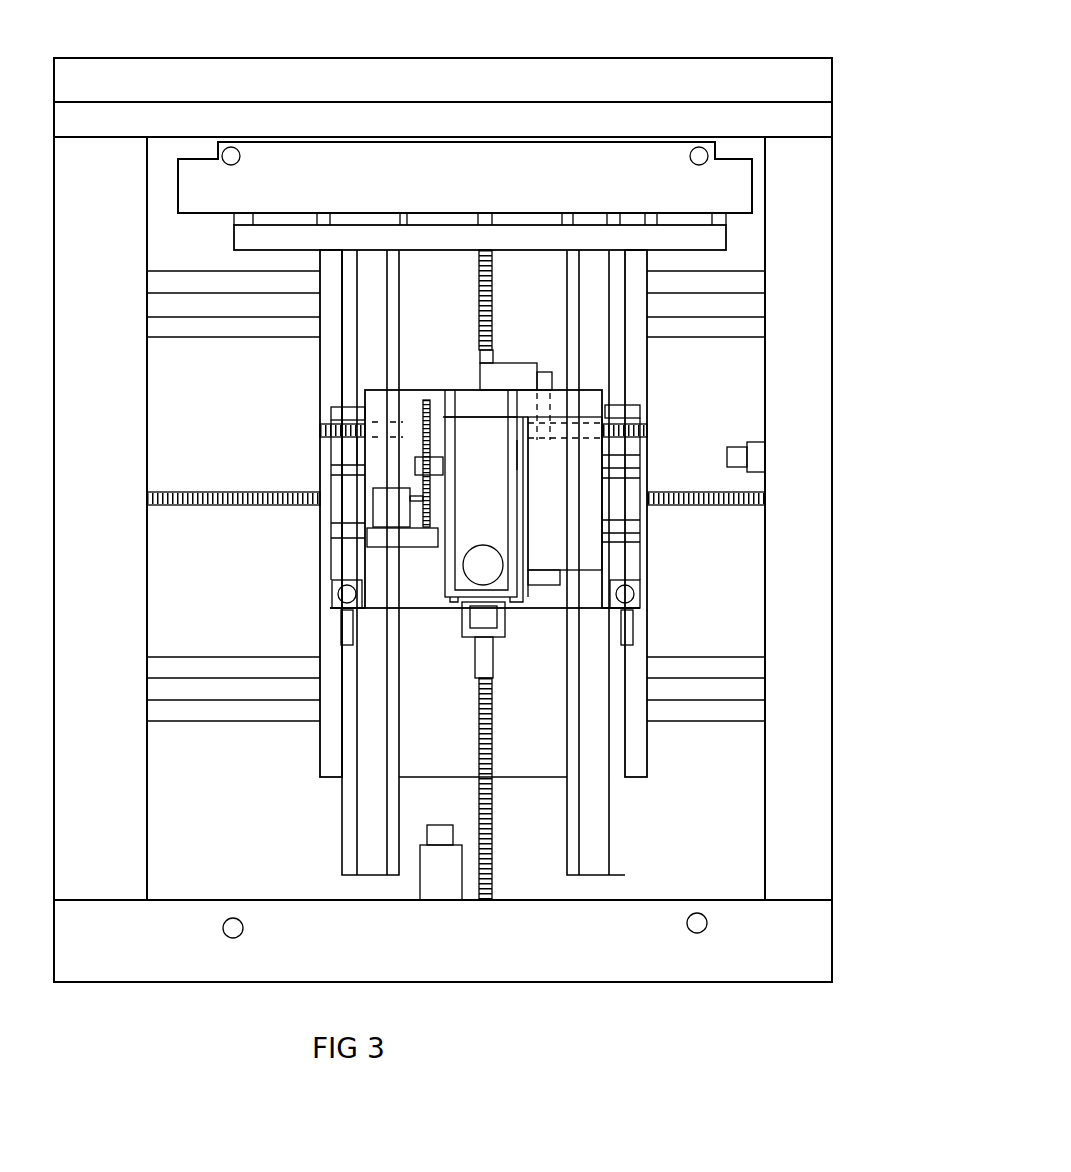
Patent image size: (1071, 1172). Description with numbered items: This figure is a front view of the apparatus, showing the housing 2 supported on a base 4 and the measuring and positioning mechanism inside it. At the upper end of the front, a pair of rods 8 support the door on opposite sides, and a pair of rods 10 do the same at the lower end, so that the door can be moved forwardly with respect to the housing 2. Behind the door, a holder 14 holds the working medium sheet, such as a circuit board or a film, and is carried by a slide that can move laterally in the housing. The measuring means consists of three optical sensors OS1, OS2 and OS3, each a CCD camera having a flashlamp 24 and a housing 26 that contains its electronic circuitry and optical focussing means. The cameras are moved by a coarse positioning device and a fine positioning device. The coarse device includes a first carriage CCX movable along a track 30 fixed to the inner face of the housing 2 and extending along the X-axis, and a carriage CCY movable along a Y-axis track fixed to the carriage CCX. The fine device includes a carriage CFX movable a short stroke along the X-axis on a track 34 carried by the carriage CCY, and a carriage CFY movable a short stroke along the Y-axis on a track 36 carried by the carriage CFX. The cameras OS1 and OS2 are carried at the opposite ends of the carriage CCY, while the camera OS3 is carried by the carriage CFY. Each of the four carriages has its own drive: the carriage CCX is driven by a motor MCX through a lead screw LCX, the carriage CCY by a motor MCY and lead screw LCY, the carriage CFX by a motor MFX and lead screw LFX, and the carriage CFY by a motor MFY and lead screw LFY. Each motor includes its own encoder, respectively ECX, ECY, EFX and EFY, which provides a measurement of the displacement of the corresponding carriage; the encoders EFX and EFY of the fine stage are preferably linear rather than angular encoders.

The housing 2 is at (690, 58).
The base 4 is at (548, 986).
The rods 8 is at (241, 163).
The rods 10 is at (225, 936).
The holder 14 is at (545, 237).
The flashlamp 24 is at (340, 623).
The housing 26 is at (346, 578).
The track 30 is at (216, 333).
The track 34 is at (345, 495).
The track 36 is at (500, 386).
The first carriage CCX is at (645, 360).
The carriage CCY is at (333, 411).
The carriage CFX is at (600, 450).
The carriage CFY is at (526, 502).
The lead screw LCX is at (708, 506).
The lead screw LCY is at (495, 850).
The lead screw LFX is at (636, 426).
The lead screw LFY is at (421, 410).
The motor MCX is at (765, 458).
The motor MCY is at (437, 890).
The motor MFX is at (495, 383).
The motor MFY is at (405, 510).
The encoder ECX is at (733, 446).
The encoder ECY is at (440, 828).
The encoder EFX is at (540, 578).
The encoder EFY is at (525, 468).
The optical sensor OS1 is at (330, 590).
The optical sensor OS2 is at (641, 590).
The optical sensor OS3 is at (505, 620).